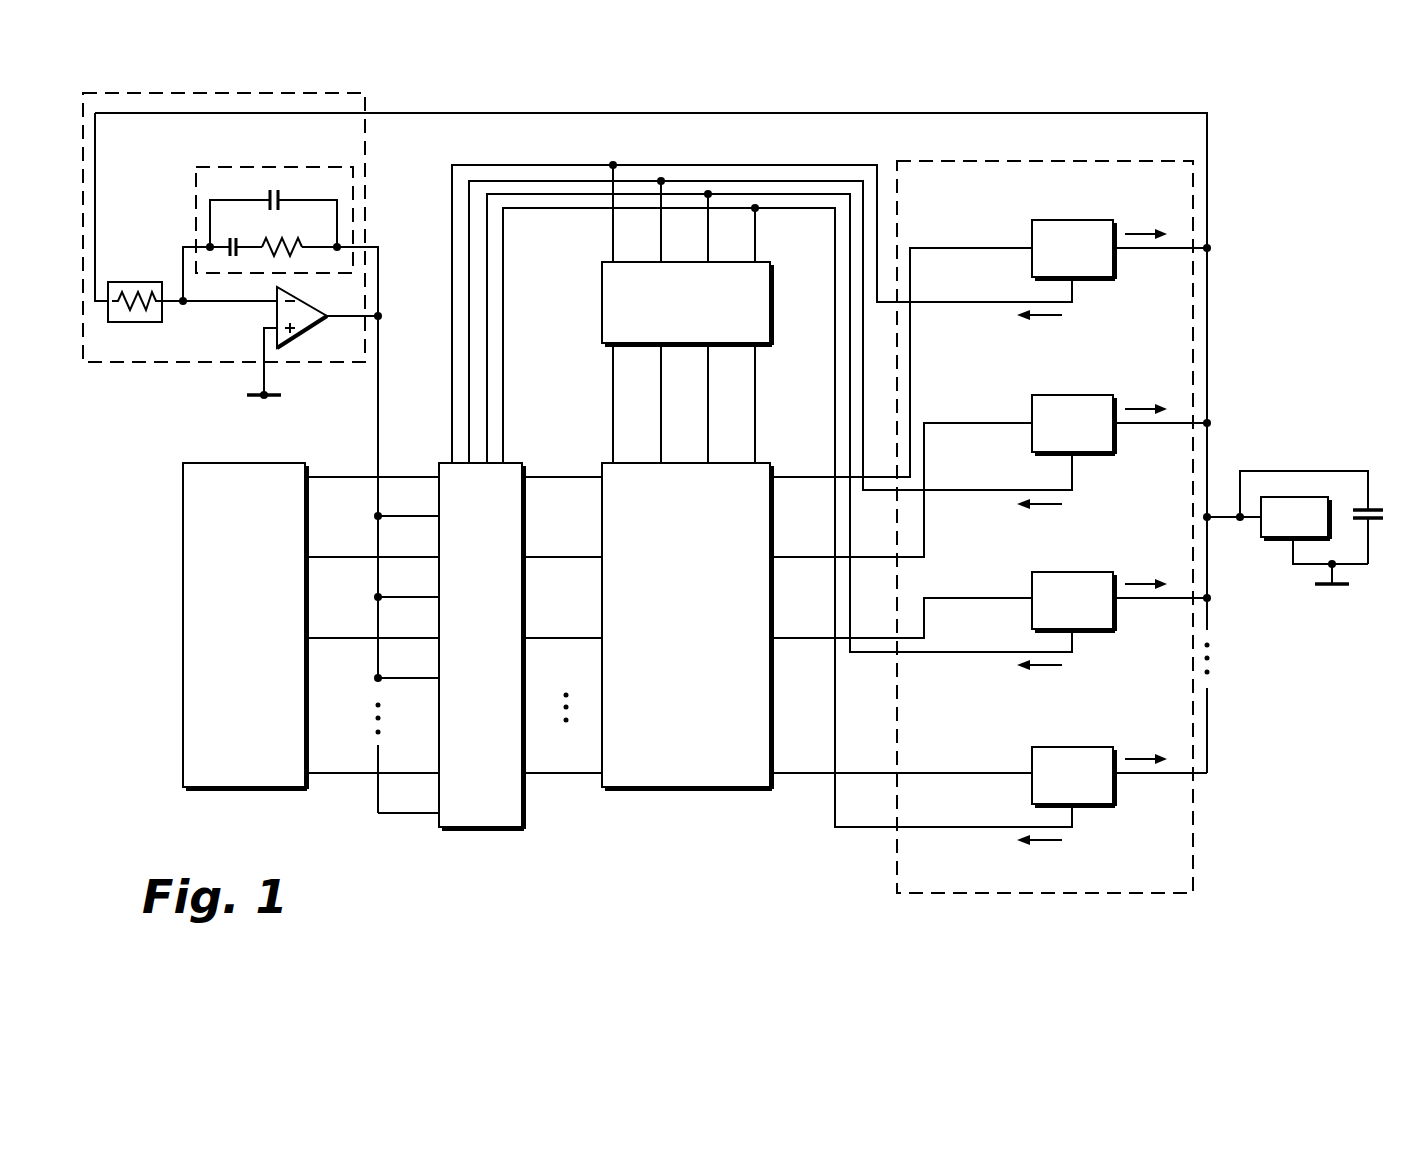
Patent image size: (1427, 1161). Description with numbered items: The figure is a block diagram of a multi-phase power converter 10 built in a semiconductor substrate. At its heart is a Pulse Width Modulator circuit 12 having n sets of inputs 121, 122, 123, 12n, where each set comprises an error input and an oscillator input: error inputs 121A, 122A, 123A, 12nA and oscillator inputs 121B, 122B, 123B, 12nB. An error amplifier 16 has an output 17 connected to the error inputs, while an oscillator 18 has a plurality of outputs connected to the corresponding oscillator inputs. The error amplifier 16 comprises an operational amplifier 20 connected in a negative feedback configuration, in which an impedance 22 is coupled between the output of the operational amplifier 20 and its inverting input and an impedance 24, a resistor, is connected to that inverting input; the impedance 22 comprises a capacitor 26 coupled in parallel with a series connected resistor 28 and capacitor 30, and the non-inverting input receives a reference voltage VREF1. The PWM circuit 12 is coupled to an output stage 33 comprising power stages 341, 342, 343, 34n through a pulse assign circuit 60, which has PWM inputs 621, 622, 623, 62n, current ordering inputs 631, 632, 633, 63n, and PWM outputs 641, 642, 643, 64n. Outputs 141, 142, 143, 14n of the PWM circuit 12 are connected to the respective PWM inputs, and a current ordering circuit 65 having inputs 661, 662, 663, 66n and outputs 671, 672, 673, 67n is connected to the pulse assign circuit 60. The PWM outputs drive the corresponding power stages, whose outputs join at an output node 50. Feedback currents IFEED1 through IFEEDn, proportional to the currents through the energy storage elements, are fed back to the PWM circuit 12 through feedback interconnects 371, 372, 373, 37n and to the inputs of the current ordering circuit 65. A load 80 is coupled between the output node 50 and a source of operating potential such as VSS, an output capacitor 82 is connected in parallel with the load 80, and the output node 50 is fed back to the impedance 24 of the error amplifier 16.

The multi-phase power converter 10 is at (138, 838).
The Pulse Width Modulator circuit 12 is at (483, 827).
The first set of inputs 121 is at (368, 507).
The second set of inputs 122 is at (368, 588).
The third set of inputs 123 is at (368, 668).
The nth set of inputs 12n is at (367, 791).
The error input 121A is at (399, 517).
The oscillator input 121B is at (399, 477).
The error input 122A is at (399, 598).
The oscillator input 122B is at (399, 558).
The error input 123A is at (399, 679).
The oscillator input 123B is at (399, 639).
The error input 12nA is at (399, 814).
The oscillator input 12nB is at (399, 774).
The output 141 is at (524, 474).
The output 142 is at (524, 554).
The output 143 is at (524, 635).
The output 14n is at (524, 770).
The error amplifier 16 is at (155, 362).
The output 17 is at (379, 316).
The oscillator 18 is at (215, 463).
The operational amplifier 20 is at (311, 333).
The impedance 22 is at (245, 167).
The impedance 24 is at (130, 282).
The capacitor 26 is at (275, 200).
The resistor 28 is at (291, 247).
The capacitor 30 is at (234, 247).
The output stage 33 is at (1058, 161).
The power stage 341 is at (1053, 220).
The power stage 342 is at (1053, 395).
The power stage 343 is at (1053, 572).
The power stage 34n is at (1053, 747).
The feedback interconnect 371 is at (945, 302).
The feedback interconnect 372 is at (958, 490).
The feedback interconnect 373 is at (891, 653).
The feedback interconnect 37n is at (888, 827).
The output node 50 is at (1209, 520).
The pulse assign circuit 60 is at (695, 790).
The PWM input 621 is at (601, 482).
The PWM input 622 is at (601, 562).
The PWM input 623 is at (601, 643).
The PWM input 62n is at (601, 778).
The current ordering input 631 is at (612, 460).
The current ordering input 632 is at (660, 460).
The current ordering input 633 is at (707, 460).
The current ordering input 63n is at (754, 460).
The PWM output 641 is at (775, 477).
The PWM output 642 is at (775, 557).
The PWM output 643 is at (775, 638).
The PWM output 64n is at (775, 773).
The current ordering circuit 65 is at (602, 305).
The input 661 is at (614, 260).
The input 662 is at (662, 260).
The input 663 is at (709, 260).
The input 66n is at (756, 260).
The output 671 is at (612, 350).
The output 672 is at (660, 350).
The output 673 is at (707, 350).
The output 67n is at (754, 350).
The load 80 is at (1276, 540).
The output capacitor 82 is at (1385, 520).